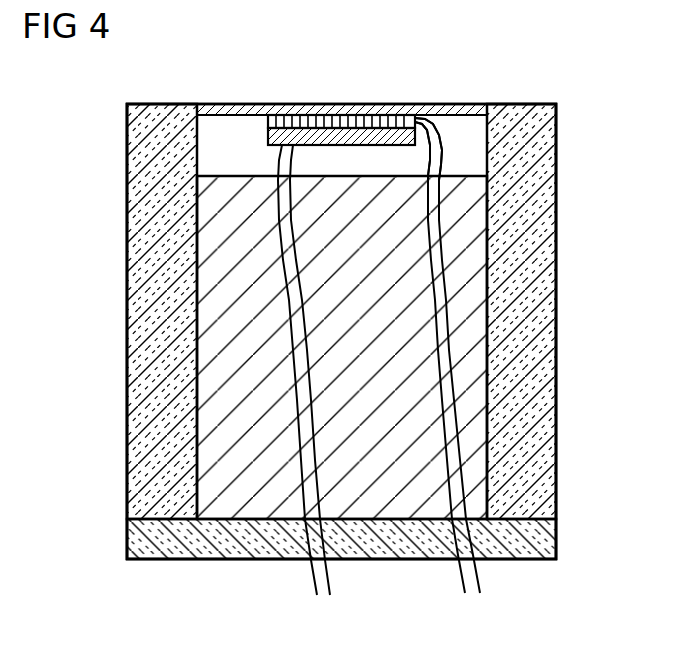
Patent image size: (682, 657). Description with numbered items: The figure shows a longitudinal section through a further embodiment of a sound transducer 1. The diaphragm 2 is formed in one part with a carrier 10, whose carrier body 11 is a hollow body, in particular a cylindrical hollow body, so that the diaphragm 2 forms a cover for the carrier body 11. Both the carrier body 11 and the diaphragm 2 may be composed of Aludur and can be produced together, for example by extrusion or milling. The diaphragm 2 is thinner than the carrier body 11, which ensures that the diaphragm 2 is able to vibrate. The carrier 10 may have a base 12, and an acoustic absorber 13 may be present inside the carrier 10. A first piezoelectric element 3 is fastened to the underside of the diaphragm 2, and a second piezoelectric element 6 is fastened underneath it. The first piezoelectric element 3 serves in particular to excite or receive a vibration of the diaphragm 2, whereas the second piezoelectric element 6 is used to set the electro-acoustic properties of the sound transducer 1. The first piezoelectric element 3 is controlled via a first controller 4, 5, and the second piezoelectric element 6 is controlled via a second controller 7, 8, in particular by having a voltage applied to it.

The sound transducer 1 is at (512, 76).
The diaphragm 2 is at (428, 113).
The first piezoelectric element 3 is at (301, 120).
The first controller 4 is at (456, 370).
The first controller 5 is at (444, 375).
The second piezoelectric element 6 is at (351, 132).
The second controller 7 is at (302, 386).
The second controller 8 is at (321, 384).
The carrier 10 is at (291, 332).
The carrier body 11 is at (137, 282).
The base 12 is at (135, 537).
The acoustic absorber 13 is at (257, 505).